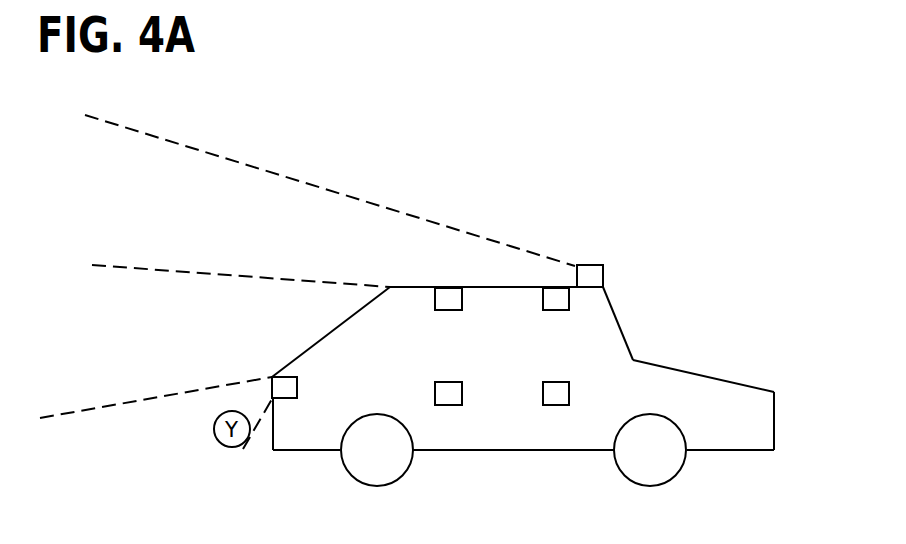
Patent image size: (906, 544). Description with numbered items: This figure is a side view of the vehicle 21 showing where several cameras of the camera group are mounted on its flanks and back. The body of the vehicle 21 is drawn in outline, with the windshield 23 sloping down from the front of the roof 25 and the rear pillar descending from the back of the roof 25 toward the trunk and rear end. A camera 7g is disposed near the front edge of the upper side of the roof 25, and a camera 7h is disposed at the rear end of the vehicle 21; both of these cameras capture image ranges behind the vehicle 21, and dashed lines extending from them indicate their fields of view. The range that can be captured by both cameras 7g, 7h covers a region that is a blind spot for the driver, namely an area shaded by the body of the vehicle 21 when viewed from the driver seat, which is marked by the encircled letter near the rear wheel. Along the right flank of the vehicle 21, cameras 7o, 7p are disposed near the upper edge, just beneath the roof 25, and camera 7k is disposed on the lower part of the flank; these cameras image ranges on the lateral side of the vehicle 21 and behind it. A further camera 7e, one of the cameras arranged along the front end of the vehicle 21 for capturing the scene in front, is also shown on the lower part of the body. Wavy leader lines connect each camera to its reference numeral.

The vehicle 21 is at (407, 287).
The roof 25 is at (500, 287).
The windshield 23 is at (617, 313).
The camera 7g is at (588, 265).
The camera 7h is at (284, 388).
The camera 7p is at (452, 311).
The camera 7o is at (555, 311).
The camera 7e is at (452, 406).
The camera 7k is at (555, 406).